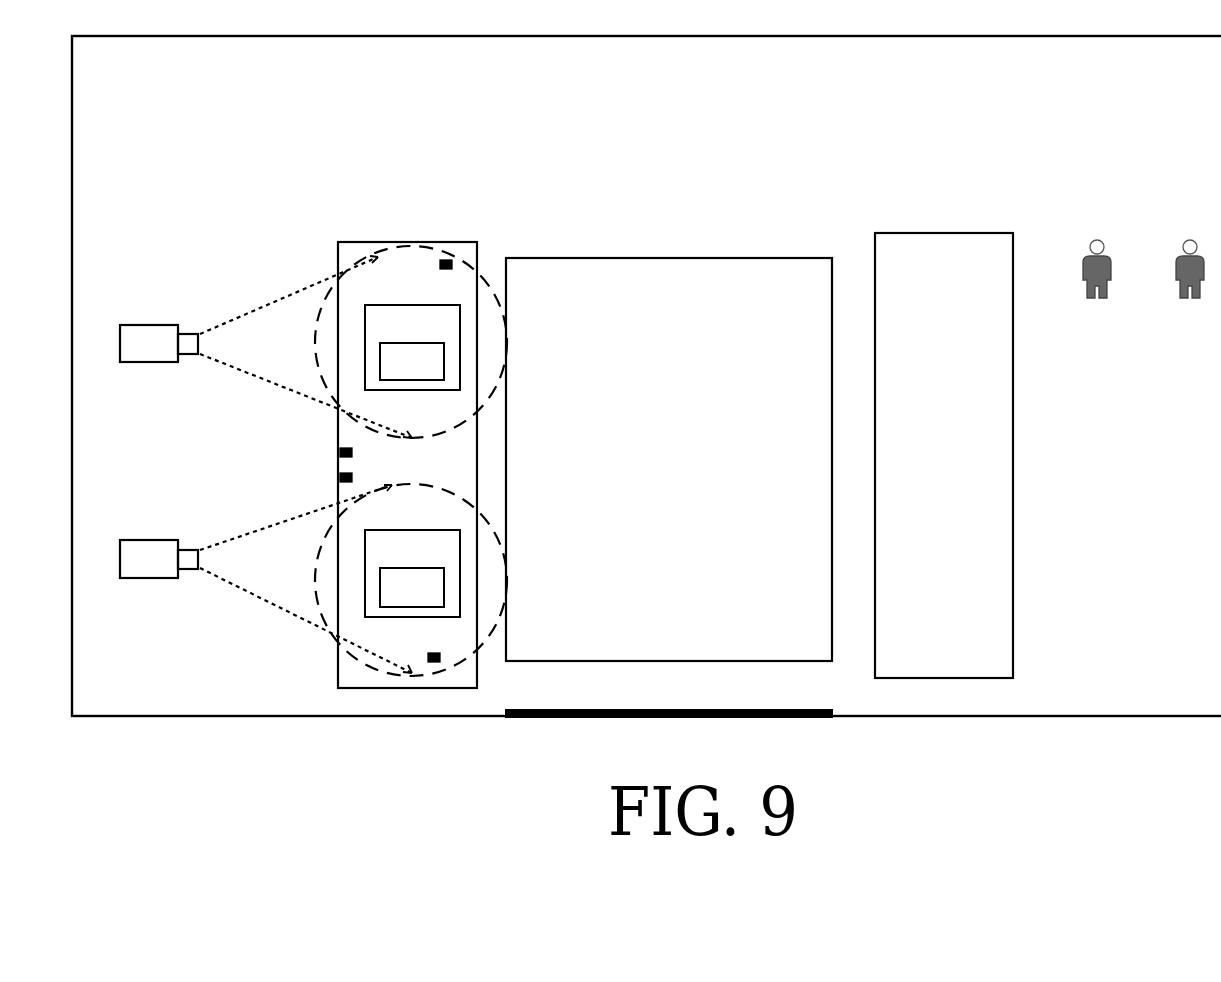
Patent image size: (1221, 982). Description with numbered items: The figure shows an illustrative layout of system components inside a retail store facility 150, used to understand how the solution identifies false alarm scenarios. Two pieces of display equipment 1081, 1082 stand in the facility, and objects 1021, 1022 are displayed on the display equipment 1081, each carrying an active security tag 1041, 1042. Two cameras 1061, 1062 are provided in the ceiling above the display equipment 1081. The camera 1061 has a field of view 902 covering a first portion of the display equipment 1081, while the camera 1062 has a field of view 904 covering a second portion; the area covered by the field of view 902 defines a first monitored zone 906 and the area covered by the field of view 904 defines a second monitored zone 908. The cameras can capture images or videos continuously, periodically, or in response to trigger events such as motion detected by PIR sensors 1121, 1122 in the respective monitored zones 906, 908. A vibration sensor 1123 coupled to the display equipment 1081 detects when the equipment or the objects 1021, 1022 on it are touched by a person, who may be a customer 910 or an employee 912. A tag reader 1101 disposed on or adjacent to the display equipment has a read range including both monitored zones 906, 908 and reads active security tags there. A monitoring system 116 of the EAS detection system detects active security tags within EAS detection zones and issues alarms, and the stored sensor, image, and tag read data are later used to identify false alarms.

The retail store facility 150 is at (646, 376).
The display equipment 1081 is at (437, 205).
The display equipment 1082 is at (971, 197).
The object 1021 is at (412, 347).
The object 1022 is at (412, 573).
The security tag 1041 is at (412, 361).
The security tag 1042 is at (412, 587).
The PIR sensor 1121 is at (446, 258).
The PIR sensor 1122 is at (442, 658).
The vibration sensor 1123 is at (340, 450).
The tag reader 1101 is at (340, 478).
The camera 1061 is at (173, 287).
The camera 1062 is at (173, 499).
The monitoring system 116 is at (669, 459).
The field of view 902 is at (253, 378).
The field of view 904 is at (237, 588).
The first monitored zone 906 is at (327, 300).
The second monitored zone 908 is at (337, 637).
The customer 910 is at (1097, 286).
The employee 912 is at (1190, 286).